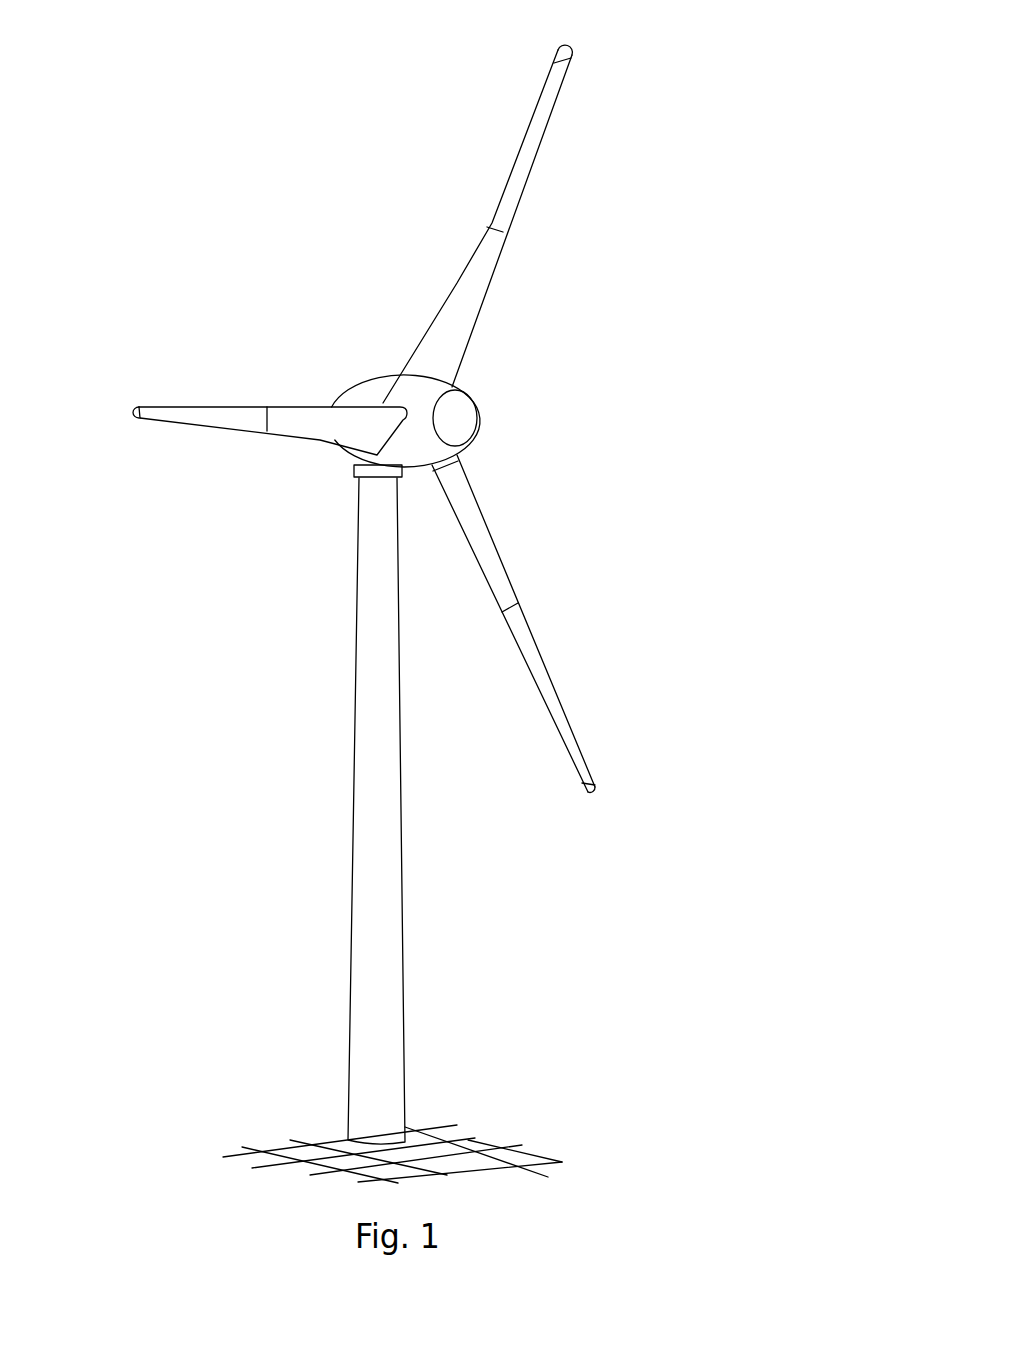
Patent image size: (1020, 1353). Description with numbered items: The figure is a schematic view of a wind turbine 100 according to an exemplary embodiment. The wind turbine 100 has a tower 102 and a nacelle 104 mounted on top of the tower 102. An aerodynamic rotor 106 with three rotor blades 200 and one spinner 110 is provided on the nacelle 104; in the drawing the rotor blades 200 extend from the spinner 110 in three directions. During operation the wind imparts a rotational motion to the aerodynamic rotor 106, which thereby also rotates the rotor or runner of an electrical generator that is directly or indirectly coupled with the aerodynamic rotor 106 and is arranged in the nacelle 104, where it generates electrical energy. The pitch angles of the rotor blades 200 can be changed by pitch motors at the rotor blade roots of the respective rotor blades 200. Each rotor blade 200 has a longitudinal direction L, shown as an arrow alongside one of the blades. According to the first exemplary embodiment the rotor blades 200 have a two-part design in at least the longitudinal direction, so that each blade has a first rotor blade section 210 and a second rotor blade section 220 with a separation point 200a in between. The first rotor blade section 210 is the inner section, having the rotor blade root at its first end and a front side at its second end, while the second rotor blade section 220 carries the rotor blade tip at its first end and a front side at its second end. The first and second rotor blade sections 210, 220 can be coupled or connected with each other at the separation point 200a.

The wind turbine 100 is at (315, 545).
The tower 102 is at (388, 887).
The nacelle 104 is at (375, 395).
The aerodynamic rotor 106 is at (615, 300).
The spinner 110 is at (458, 418).
The rotor blade 200 is at (215, 412).
The separation point 200a is at (503, 233).
The first rotor blade section 210 is at (293, 422).
The second rotor blade section 220 is at (220, 427).
The longitudinal direction L is at (437, 515).